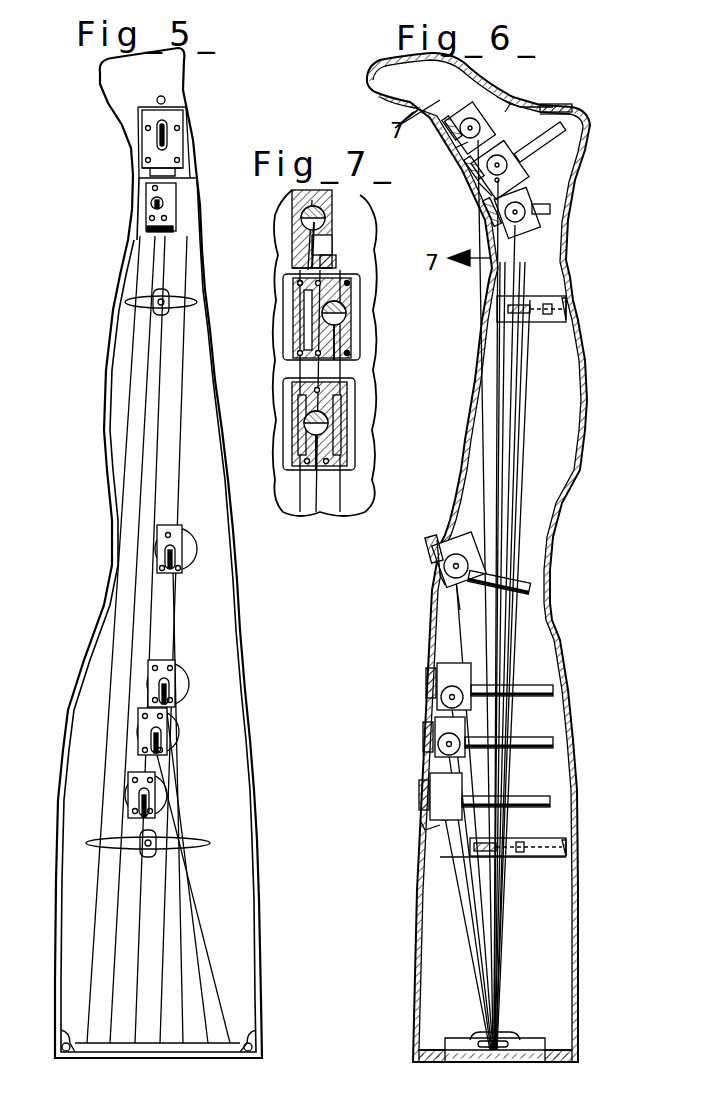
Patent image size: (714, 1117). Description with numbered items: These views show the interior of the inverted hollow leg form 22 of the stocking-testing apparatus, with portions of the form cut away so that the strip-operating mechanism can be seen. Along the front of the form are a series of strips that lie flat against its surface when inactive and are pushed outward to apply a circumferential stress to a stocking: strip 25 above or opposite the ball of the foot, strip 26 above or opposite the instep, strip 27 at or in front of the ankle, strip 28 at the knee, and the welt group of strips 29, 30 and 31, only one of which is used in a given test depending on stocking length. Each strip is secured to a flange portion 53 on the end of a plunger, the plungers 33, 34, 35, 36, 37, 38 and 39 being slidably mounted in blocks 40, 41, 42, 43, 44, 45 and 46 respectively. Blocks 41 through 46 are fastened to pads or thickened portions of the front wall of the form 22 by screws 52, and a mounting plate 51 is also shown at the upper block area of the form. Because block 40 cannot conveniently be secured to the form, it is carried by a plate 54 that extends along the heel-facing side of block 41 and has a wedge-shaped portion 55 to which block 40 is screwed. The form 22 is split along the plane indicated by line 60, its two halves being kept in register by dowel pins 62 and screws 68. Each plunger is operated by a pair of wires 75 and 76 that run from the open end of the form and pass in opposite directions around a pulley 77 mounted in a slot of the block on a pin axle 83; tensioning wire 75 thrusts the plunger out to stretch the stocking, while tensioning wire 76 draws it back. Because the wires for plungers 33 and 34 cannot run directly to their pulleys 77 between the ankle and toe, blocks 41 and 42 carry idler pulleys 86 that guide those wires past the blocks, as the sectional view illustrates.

In FIG. 5, the leg form 22 is at (108, 445).
In FIG. 7, the leg form 22 is at (335, 500).
In FIG. 6, the leg form 22 is at (588, 342).
In FIG. 6, the strip element 25 is at (452, 133).
In FIG. 6, the strip element 26 is at (470, 168).
In FIG. 6, the strip element 27 is at (485, 215).
In FIG. 6, the strip element 28 is at (436, 549).
In FIG. 6, the strip element 29 is at (435, 682).
In FIG. 6, the strip element 30 is at (432, 739).
In FIG. 6, the strip element 31 is at (428, 796).
In FIG. 7, the plunger 33 is at (330, 220).
In FIG. 6, the plunger 33 is at (500, 93).
In FIG. 5, the plunger 34 is at (172, 126).
In FIG. 7, the plunger 34 is at (345, 318).
In FIG. 6, the plunger 34 is at (520, 140).
In FIG. 5, the plunger 35 is at (165, 203).
In FIG. 7, the plunger 35 is at (328, 420).
In FIG. 6, the plunger 35 is at (550, 208).
In FIG. 5, the plunger 36 is at (163, 560).
In FIG. 6, the plunger 36 is at (528, 590).
In FIG. 5, the plunger 37 is at (175, 685).
In FIG. 6, the plunger 37 is at (553, 694).
In FIG. 5, the plunger 38 is at (163, 736).
In FIG. 6, the plunger 38 is at (555, 746).
In FIG. 5, the plunger 39 is at (150, 797).
In FIG. 6, the plunger 39 is at (550, 805).
In FIG. 7, the block 40 is at (335, 195).
In FIG. 6, the block 40 is at (475, 110).
In FIG. 7, the block 41 is at (350, 300).
In FIG. 6, the block 41 is at (490, 188).
In FIG. 5, the block 42 is at (150, 195).
In FIG. 7, the block 42 is at (350, 395).
In FIG. 6, the block 42 is at (540, 195).
In FIG. 5, the block 43 is at (160, 538).
In FIG. 6, the block 43 is at (455, 540).
In FIG. 5, the block 44 is at (150, 672).
In FIG. 6, the block 44 is at (450, 665).
In FIG. 5, the block 45 is at (140, 724).
In FIG. 6, the block 45 is at (445, 722).
In FIG. 5, the block 46 is at (135, 784).
In FIG. 6, the block 46 is at (443, 780).
In FIG. 5, the mounting plate 51 is at (148, 136).
In FIG. 5, the screws 52 is at (155, 187).
In FIG. 7, the screws 52 is at (300, 360).
In FIG. 6, the flange portion 53 is at (478, 540).
In FIG. 6, the plate 54 is at (530, 160).
In FIG. 7, the wedge-shaped portion 55 is at (292, 262).
In FIG. 6, the wedge-shaped portion 55 is at (462, 150).
In FIG. 6, the line 60 is at (525, 388).
In FIG. 6, the dowel pins 62 is at (545, 100).
In FIG. 6, the screws 68 is at (552, 300).
In FIG. 6, the operating wire 75 is at (500, 437).
In FIG. 6, the operating wire 76 is at (520, 457).
In FIG. 7, the pulley 77 is at (308, 240).
In FIG. 6, the pulley 77 is at (520, 232).
In FIG. 6, the pin axle 83 is at (425, 822).
In FIG. 7, the idler pulley 86 is at (305, 315).
In FIG. 6, the idler pulley 86 is at (578, 108).